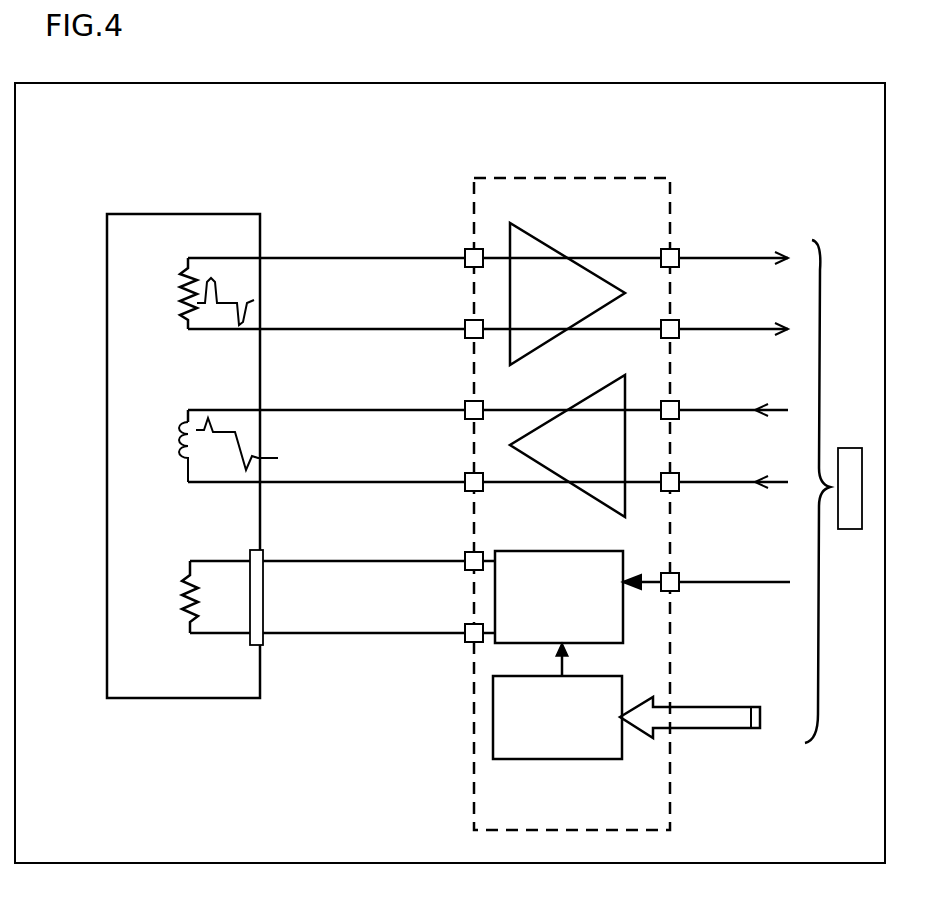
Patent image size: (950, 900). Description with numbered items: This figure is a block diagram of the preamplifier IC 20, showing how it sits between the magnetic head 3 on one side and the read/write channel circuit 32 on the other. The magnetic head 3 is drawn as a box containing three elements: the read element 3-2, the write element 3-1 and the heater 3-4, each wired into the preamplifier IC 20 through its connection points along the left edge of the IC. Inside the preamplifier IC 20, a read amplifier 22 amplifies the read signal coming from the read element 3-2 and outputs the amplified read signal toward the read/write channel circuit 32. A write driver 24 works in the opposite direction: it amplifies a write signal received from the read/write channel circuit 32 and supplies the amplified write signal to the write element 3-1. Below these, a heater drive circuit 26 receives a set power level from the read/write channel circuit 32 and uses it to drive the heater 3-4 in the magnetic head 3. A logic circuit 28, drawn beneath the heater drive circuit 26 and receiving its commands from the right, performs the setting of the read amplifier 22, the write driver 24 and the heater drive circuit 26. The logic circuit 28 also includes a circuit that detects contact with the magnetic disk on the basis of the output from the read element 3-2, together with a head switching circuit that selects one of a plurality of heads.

The magnetic head 3 is at (132, 225).
The read element 3-2 is at (182, 280).
The write element 3-1 is at (176, 433).
The heater 3-4 is at (182, 616).
The preamplifier IC 20 is at (479, 203).
The read amplifier 22 is at (560, 256).
The write driver 24 is at (610, 393).
The heater drive circuit 26 is at (508, 561).
The logic circuit 28 is at (545, 748).
The read/write channel circuit 32 is at (845, 447).